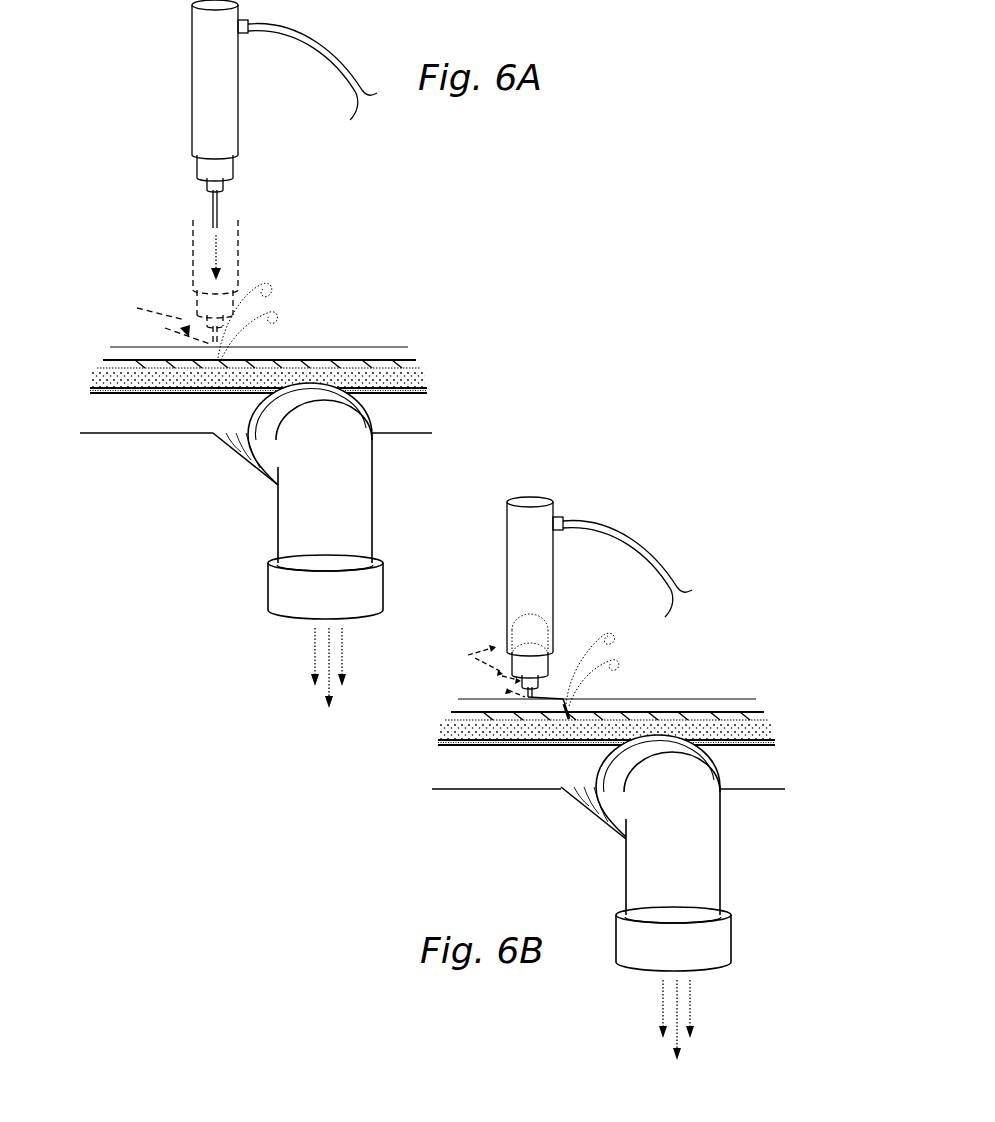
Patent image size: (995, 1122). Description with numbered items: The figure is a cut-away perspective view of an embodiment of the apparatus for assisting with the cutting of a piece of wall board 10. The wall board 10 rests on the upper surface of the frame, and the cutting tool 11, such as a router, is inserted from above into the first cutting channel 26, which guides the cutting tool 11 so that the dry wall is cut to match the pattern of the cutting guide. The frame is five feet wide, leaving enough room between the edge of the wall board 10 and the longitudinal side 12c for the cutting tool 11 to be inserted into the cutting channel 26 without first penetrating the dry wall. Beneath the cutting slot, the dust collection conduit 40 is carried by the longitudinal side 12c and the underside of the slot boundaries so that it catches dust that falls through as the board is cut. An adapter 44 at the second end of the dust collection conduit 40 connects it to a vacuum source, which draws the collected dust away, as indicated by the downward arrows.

In FIG. 6A, the cutting tool 11 is at (207, 88).
In FIG. 6B, the cutting tool 11 is at (520, 542).
In FIG. 6A, the first cutting channel 26 is at (190, 323).
In FIG. 6B, the first cutting channel 26 is at (478, 646).
In FIG. 6A, the wall board 10 is at (140, 346).
In FIG. 6B, the wall board 10 is at (688, 700).
In FIG. 6A, the longitudinal side 12c is at (162, 418).
In FIG. 6B, the longitudinal side 12c is at (482, 778).
In FIG. 6A, the dust collection conduit 40 is at (229, 458).
In FIG. 6B, the dust collection conduit 40 is at (578, 808).
In FIG. 6A, the adapter 44 is at (290, 515).
In FIG. 6B, the adapter 44 is at (708, 845).